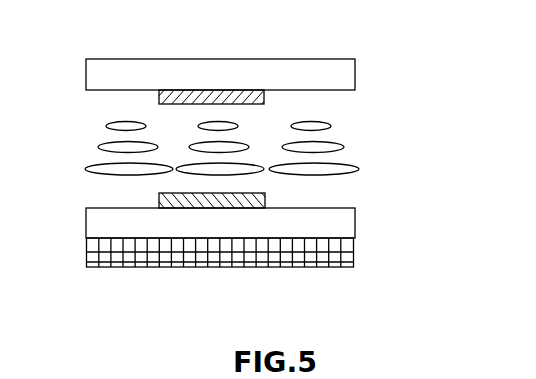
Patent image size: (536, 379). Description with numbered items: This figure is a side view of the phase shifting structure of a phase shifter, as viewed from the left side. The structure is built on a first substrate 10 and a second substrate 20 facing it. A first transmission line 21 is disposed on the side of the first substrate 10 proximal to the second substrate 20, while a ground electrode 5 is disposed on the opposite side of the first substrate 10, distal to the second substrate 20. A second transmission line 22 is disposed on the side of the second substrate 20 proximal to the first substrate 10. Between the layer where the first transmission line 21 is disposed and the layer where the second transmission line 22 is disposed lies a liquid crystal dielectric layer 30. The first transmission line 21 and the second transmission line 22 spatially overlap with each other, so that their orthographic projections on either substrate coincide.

The ground electrode 5 is at (335, 252).
The first substrate 10 is at (287, 225).
The second substrate 20 is at (277, 82).
The first transmission line 21 is at (202, 200).
The second transmission line 22 is at (205, 104).
The liquid crystal dielectric layer 30 is at (350, 148).